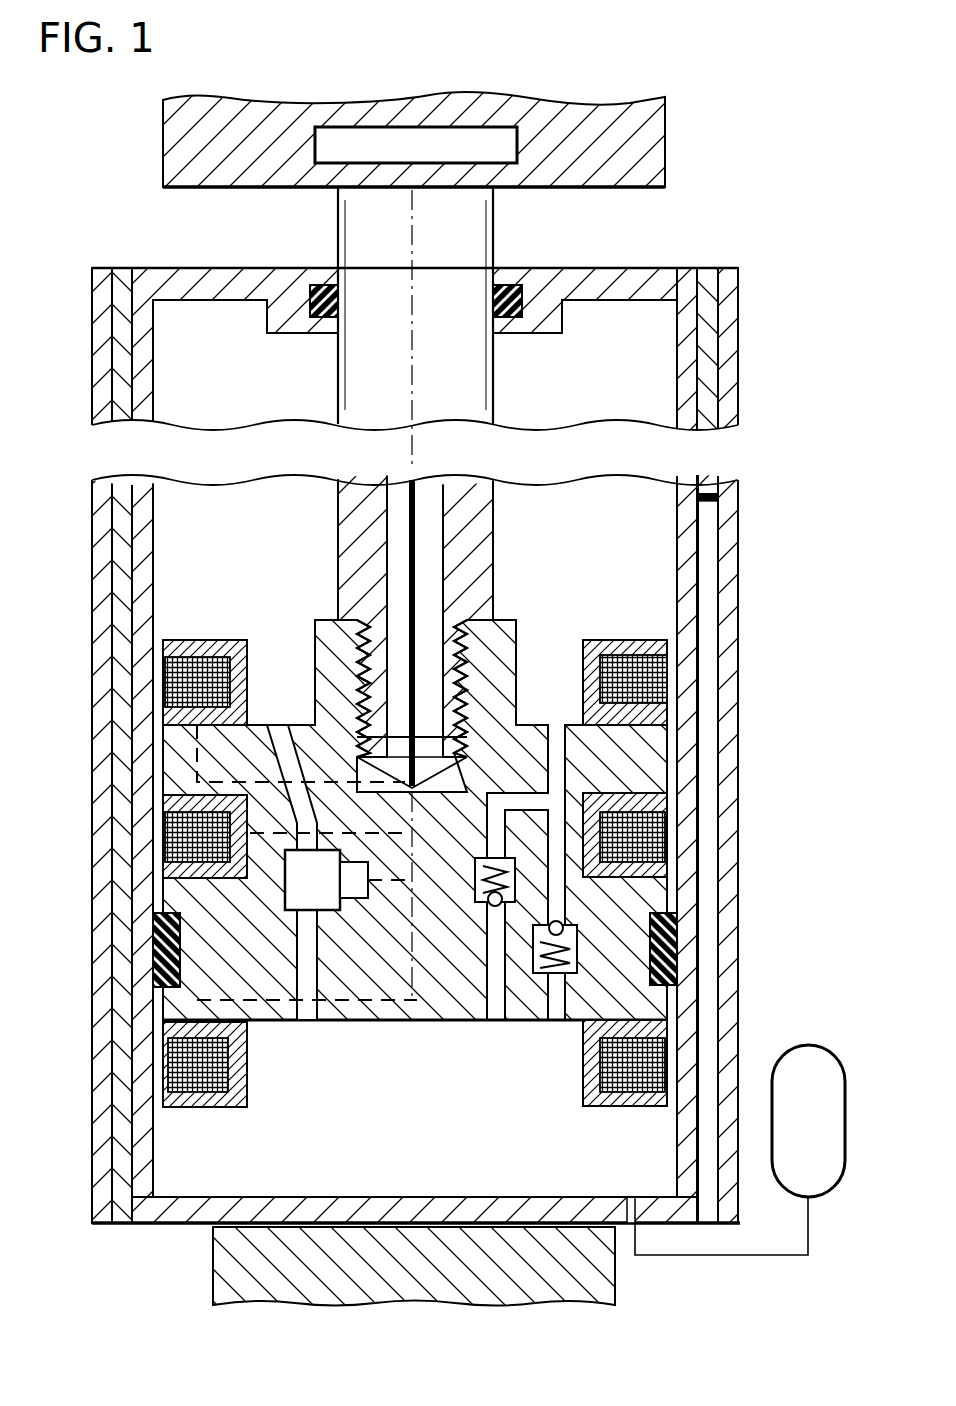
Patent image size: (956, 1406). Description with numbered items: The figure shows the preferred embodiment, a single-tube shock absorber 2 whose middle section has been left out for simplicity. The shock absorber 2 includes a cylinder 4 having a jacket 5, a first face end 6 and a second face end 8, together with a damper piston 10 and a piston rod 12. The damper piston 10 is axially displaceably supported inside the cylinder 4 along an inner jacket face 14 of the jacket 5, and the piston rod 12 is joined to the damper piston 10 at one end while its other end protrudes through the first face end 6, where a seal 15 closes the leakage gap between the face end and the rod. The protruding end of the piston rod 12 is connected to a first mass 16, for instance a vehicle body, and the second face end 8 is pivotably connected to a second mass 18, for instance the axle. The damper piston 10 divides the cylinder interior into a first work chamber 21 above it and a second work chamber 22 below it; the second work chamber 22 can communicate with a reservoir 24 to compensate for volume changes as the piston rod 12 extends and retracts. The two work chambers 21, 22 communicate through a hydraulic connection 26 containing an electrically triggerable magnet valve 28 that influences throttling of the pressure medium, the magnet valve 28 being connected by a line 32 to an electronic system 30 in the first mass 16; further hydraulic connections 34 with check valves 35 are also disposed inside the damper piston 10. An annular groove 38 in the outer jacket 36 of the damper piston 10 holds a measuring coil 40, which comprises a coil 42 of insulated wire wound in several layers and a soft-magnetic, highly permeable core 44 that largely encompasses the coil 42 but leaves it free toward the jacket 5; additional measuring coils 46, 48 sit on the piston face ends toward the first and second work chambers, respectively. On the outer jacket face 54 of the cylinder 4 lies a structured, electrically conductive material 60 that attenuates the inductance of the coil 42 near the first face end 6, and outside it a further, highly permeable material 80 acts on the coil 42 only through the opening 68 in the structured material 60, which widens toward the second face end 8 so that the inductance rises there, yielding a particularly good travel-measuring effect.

The shock absorber 2 is at (435, 883).
The cylinder 4 is at (396, 242).
The jacket 5 is at (148, 600).
The first face end 6 is at (220, 290).
The second face end 8 is at (195, 1210).
The damper piston 10 is at (230, 988).
The piston rod 12 is at (445, 372).
The inner jacket face 14 is at (155, 526).
The seal 15 is at (505, 290).
The first mass 16 is at (605, 140).
The second mass 18 is at (540, 1265).
The first work chamber 21 is at (600, 530).
The second work chamber 22 is at (341, 1171).
The reservoir 24 is at (790, 1147).
The hydraulic connection 26 is at (305, 1010).
The magnet valve 28 is at (330, 899).
The electronic system 30 is at (395, 147).
The line 32 is at (405, 510).
The further hydraulic connections 34 is at (555, 1012).
The check valves 35 is at (489, 899).
The outer jacket 36 is at (672, 742).
The annular groove 38 is at (622, 795).
The measuring coil 40 is at (600, 788).
The coil 42 is at (635, 683).
The core 44 is at (415, 866).
The measuring coil 46 is at (600, 634).
The measuring coil 48 is at (598, 1112).
The outer jacket face 54 is at (125, 518).
The material influencing inductance 60 is at (125, 658).
The opening 68 is at (710, 945).
The further material 80 is at (105, 715).